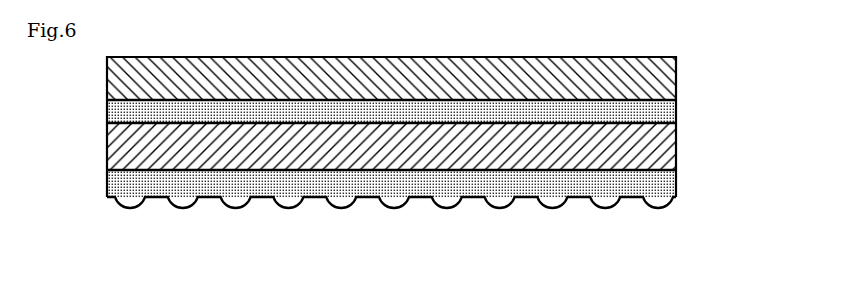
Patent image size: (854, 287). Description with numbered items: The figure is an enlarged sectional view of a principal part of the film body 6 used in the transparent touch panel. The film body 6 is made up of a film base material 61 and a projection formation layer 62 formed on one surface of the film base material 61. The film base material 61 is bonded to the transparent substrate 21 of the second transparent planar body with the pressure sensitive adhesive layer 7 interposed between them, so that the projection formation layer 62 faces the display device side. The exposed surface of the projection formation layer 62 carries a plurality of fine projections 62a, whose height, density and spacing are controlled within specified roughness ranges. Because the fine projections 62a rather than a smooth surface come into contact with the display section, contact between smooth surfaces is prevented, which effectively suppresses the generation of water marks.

The transparent substrate 21 is at (107, 78).
The pressure sensitive adhesive layer 7 is at (107, 112).
The film body 6 is at (461, 200).
The film base material 61 is at (676, 141).
The projection formation layer 62 is at (437, 224).
The fine projections 62a is at (665, 215).